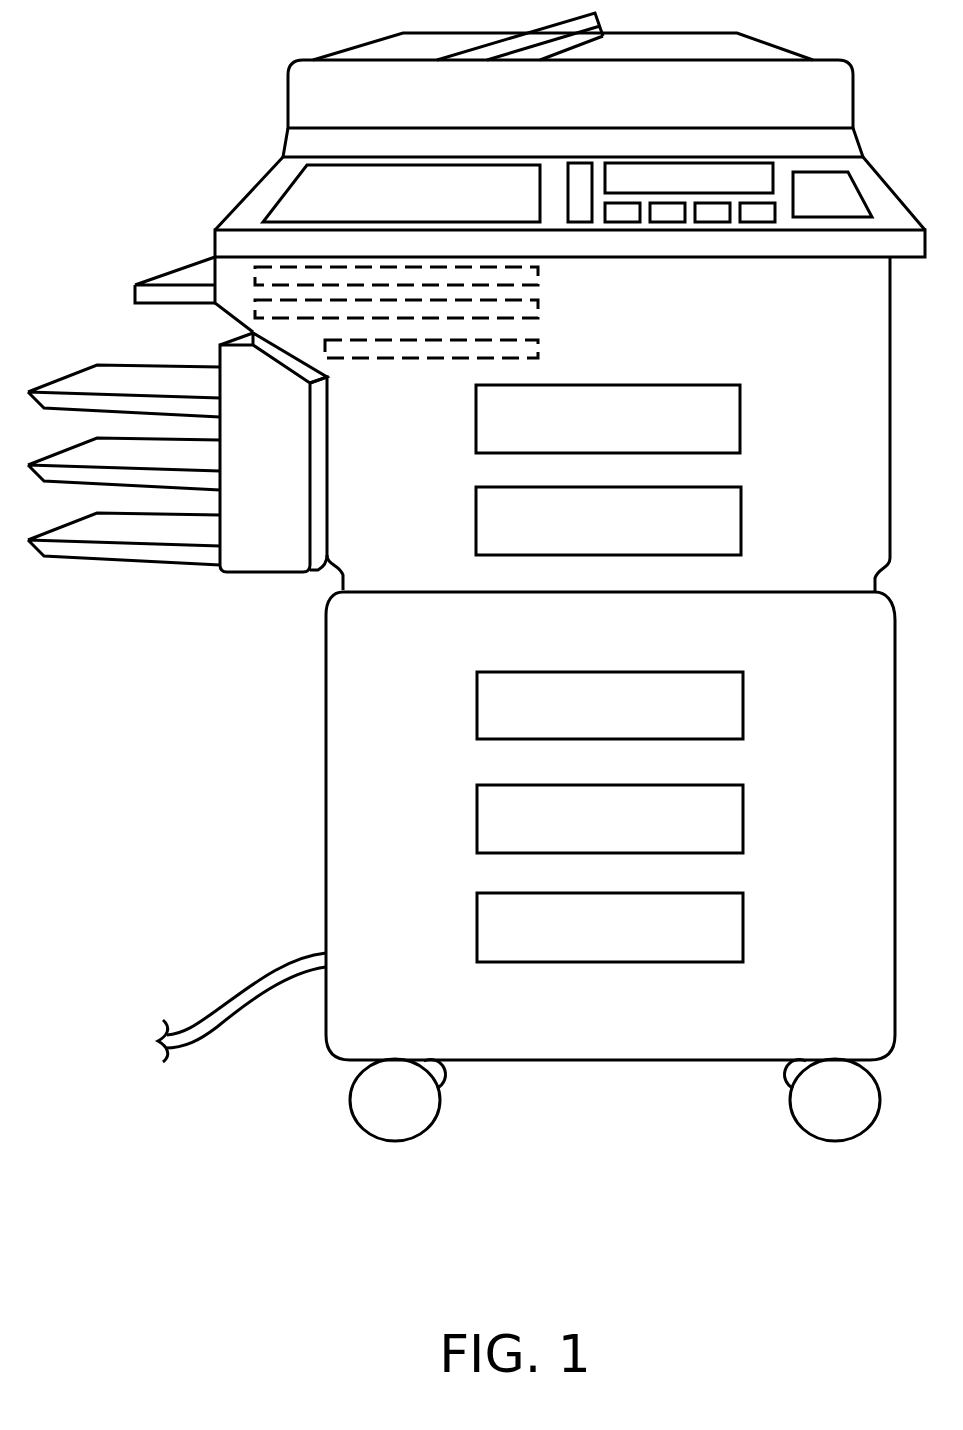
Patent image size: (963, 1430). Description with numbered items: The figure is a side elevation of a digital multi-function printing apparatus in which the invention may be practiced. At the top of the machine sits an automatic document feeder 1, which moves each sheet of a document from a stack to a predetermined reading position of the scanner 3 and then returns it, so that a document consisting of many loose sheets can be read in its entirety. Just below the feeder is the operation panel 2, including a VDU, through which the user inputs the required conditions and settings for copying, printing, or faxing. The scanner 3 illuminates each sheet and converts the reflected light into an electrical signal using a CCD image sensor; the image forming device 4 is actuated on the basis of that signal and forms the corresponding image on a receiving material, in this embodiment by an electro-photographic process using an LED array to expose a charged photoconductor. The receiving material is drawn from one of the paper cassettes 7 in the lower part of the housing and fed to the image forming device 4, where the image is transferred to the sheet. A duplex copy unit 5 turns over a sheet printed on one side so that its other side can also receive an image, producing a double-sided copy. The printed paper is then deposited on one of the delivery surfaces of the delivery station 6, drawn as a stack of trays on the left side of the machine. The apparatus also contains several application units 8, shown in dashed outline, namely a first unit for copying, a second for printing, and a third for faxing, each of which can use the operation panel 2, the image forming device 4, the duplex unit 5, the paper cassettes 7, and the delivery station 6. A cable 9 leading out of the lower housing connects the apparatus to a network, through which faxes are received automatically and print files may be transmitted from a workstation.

The automatic document feeder 1 is at (833, 78).
The operation panel 2 is at (303, 167).
The scanner 3 is at (232, 173).
The image forming device 4 is at (740, 393).
The duplex copy unit 5 is at (741, 520).
The delivery station 6 is at (137, 572).
The paper cassettes 7 is at (743, 695).
The application units 8 is at (580, 297).
The cable 9 is at (240, 997).